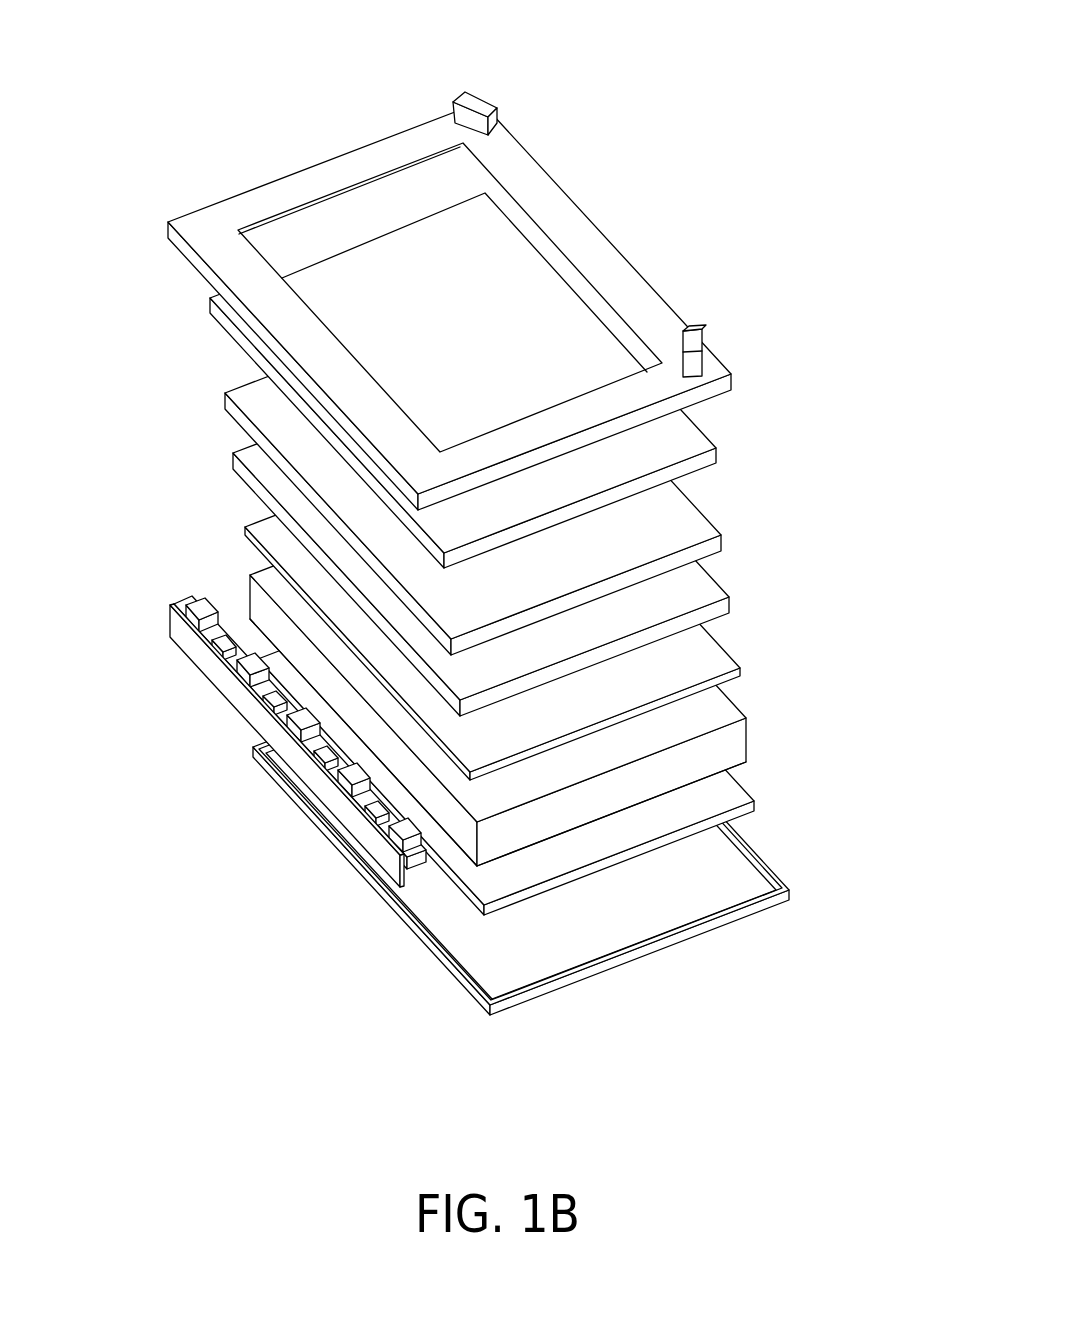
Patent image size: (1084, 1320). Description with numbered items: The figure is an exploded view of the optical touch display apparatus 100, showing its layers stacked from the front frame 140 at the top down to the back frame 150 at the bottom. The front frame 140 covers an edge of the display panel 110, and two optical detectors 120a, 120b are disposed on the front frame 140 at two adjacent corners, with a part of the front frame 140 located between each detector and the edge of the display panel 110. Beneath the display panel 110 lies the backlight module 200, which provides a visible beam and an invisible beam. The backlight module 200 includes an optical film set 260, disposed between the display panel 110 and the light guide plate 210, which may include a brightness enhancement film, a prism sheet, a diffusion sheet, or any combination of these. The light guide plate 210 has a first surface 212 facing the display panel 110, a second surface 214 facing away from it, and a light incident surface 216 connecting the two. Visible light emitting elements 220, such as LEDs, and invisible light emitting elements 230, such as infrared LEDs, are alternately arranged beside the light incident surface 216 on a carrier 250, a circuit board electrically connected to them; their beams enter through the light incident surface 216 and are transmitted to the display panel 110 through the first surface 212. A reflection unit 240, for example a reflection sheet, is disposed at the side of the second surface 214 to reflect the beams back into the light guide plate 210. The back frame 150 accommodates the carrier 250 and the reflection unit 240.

The optical touch display apparatus 100 is at (518, 560).
The display panel 110 is at (688, 433).
The optical detector 120a is at (476, 95).
The optical detector 120b is at (695, 333).
The front frame 140 is at (572, 220).
The back frame 150 is at (720, 920).
The backlight module 200 is at (522, 756).
The light guide plate 210 is at (531, 779).
The first surface 212 is at (706, 712).
The second surface 214 is at (541, 851).
The light incident surface 216 is at (457, 829).
The visible light emitting element 220 is at (300, 787).
The invisible light emitting element 230 is at (372, 809).
The reflection unit 240 is at (602, 870).
The carrier 250 is at (308, 772).
The optical film set 260 is at (218, 387).